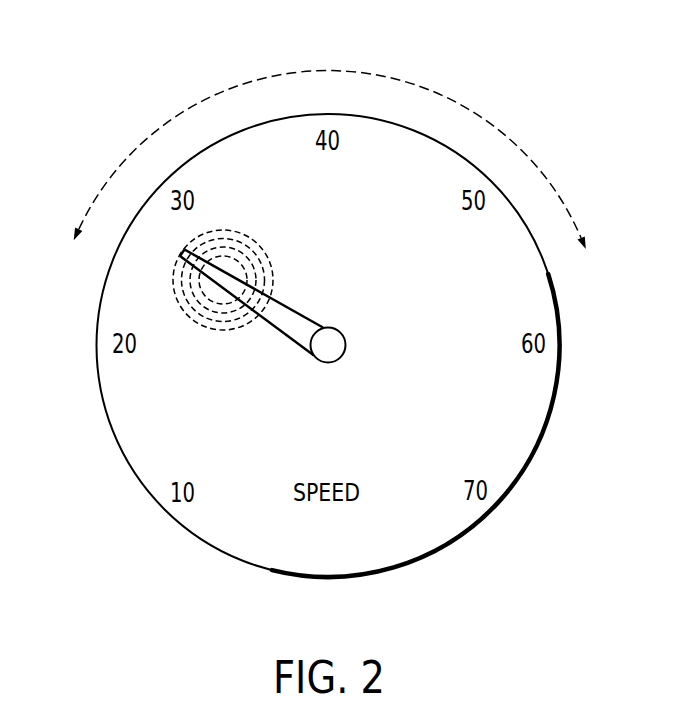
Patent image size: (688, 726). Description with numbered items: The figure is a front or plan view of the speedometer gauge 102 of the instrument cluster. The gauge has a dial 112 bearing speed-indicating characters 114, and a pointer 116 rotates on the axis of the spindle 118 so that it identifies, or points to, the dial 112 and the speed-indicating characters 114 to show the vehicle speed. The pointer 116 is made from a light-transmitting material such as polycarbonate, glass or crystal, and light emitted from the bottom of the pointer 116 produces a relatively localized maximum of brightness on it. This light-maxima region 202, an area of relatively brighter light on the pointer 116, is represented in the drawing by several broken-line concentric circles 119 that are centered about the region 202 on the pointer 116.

The speedometer gauge 102 is at (500, 91).
The dial 112 is at (427, 540).
The speed-indicating characters 114 is at (104, 344).
The pointer 116 is at (283, 318).
The spindle 118 is at (343, 353).
The broken-line concentric circles 119 is at (280, 238).
The light-maxima region 202 is at (277, 332).